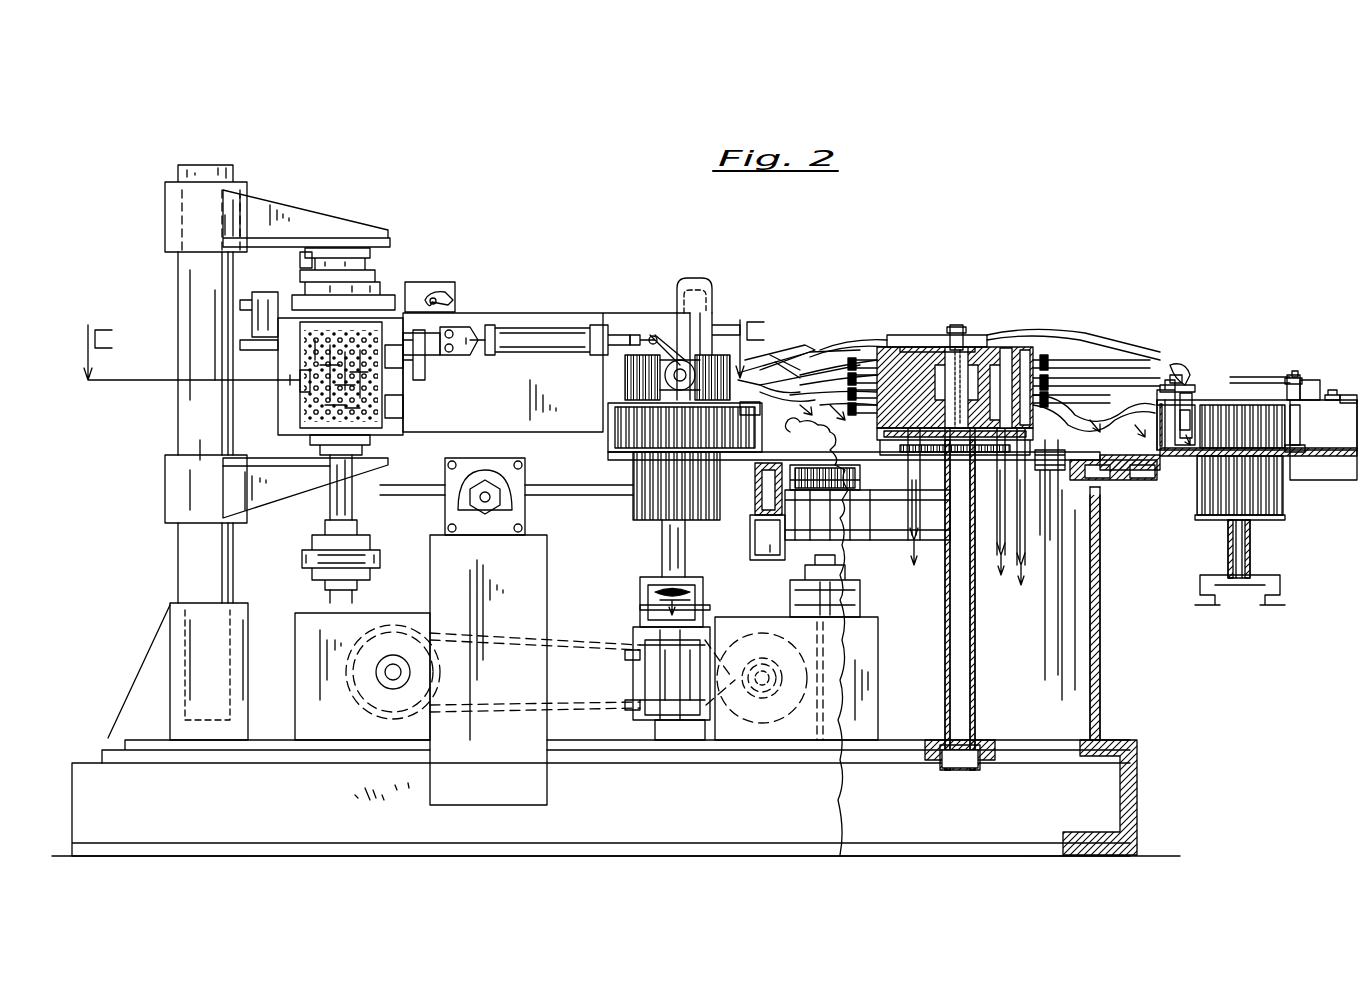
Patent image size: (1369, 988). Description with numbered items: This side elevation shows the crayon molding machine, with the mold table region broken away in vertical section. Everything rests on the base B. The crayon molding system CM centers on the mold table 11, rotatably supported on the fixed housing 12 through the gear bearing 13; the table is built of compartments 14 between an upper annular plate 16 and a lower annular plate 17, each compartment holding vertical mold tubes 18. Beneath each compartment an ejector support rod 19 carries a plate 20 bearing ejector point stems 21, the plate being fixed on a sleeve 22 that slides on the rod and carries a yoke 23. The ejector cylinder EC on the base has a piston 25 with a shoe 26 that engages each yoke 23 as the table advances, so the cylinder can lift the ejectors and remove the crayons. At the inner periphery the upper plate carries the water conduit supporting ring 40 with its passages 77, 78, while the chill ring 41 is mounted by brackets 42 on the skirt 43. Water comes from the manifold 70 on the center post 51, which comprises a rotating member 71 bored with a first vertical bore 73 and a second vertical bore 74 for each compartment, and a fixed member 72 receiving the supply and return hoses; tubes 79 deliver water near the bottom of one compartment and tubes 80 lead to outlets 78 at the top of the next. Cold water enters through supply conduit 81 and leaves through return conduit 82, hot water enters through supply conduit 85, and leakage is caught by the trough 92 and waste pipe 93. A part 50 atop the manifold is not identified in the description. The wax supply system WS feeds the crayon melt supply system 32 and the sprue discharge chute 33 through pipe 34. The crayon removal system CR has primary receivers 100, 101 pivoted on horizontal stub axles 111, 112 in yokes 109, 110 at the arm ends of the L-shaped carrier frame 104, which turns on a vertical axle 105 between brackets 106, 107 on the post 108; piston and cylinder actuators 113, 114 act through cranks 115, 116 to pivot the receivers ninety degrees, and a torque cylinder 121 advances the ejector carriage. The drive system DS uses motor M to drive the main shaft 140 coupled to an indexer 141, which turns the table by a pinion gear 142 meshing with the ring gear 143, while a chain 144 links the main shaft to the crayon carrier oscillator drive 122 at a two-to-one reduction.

The bracket 106 is at (358, 232).
The bracket 107 is at (312, 495).
The post 108 is at (195, 420).
The torque cylinder 121 is at (443, 297).
The yoke 110 is at (290, 390).
The horizontal stub axle 111 is at (285, 380).
The primary receiver 101 is at (355, 410).
The vertical axle 105 is at (352, 518).
The L-shaped carrier frame 104 is at (429, 450).
The crayon removal system CR is at (601, 281).
The yoke 109 is at (648, 318).
The piston and cylinder actuator 113 is at (528, 330).
The piston and cylinder actuator 114 is at (470, 352).
The horizontal stub axle 112 is at (428, 372).
The crank 116 is at (425, 393).
The crank 115 is at (650, 345).
The pipe 34 is at (693, 285).
The primary receiver 100 is at (695, 368).
The sprue discharge chute 33 is at (770, 362).
The plate 20 is at (632, 522).
The ejector point stem 21 is at (650, 488).
The yoke 23 is at (660, 560).
The shoe 26 is at (652, 592).
The piston 25 is at (690, 607).
The motor M is at (640, 678).
The ejector cylinder EC is at (672, 715).
The chain 144 is at (568, 648).
The wax supply system WS is at (490, 578).
The crayon carrier oscillator drive 122 is at (370, 733).
The crayon melt supply system 32 is at (487, 480).
The drive system DS is at (775, 728).
The main shaft 140 is at (830, 575).
The indexer 141 is at (770, 540).
The pinion gear 142 is at (800, 478).
The inlet or outlet passage 77 is at (1185, 360).
The supply conduit 81 is at (912, 512).
The supply conduit 85 is at (1000, 550).
The return conduit 82 is at (1040, 560).
The trough 92 is at (1068, 480).
The waste pipe 93 is at (1050, 550).
The gear bearing 13 is at (1120, 478).
The ring gear 143 is at (1140, 470).
The water manifold 70 is at (933, 320).
The cap plate 50 is at (905, 335).
The center post 51 is at (978, 325).
The rotating member 71 is at (1000, 348).
The first vertical bore 73 is at (1028, 350).
The second vertical bore 74 is at (885, 412).
The fixed member 72 is at (838, 448).
The tube 79 is at (1105, 368).
The tube 80 is at (1085, 400).
The outlet passage 78 is at (1160, 395).
The crayon molding system CM is at (1231, 358).
The upper annular plate 16 is at (1240, 405).
The mold tube 18 is at (1275, 430).
The lower annular plate 17 is at (1285, 450).
The compartment 14 is at (1290, 455).
The ejector support rod 19 is at (1230, 505).
The sleeve 22 is at (1250, 558).
The water conduit supporting ring 40 is at (1185, 385).
The chill ring 41 is at (1292, 375).
The mold table 11 is at (1307, 366).
The bracket 42 is at (1312, 392).
The skirt 43 is at (1350, 398).
The fixed housing 12 is at (1098, 662).
The base B is at (618, 813).